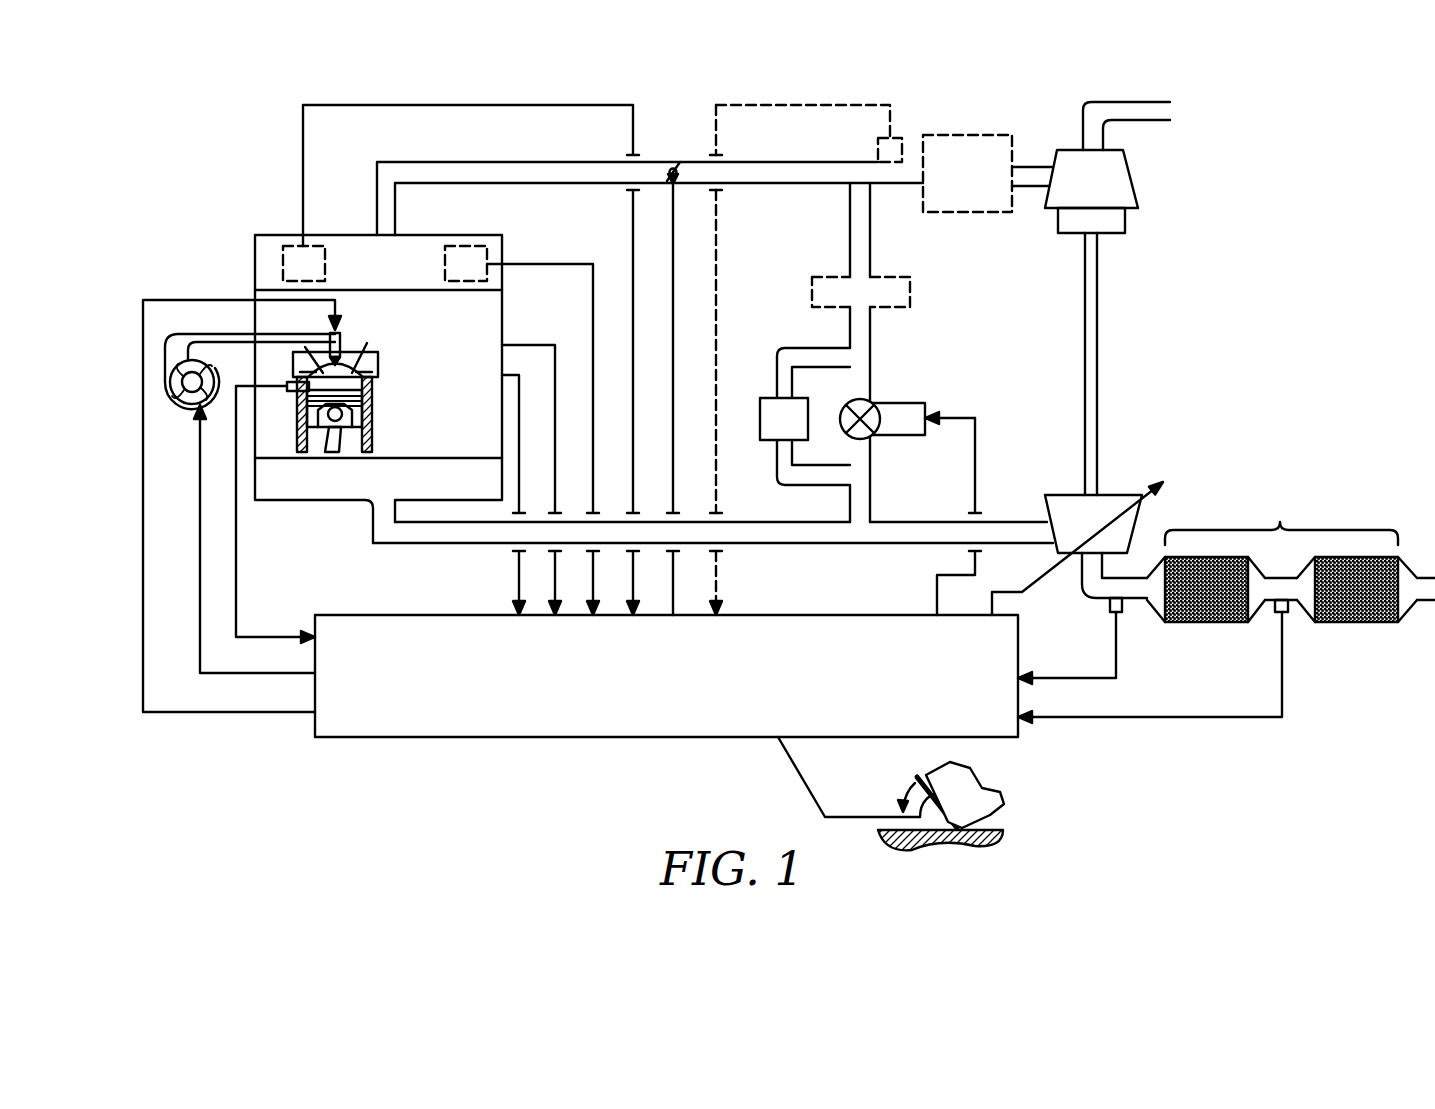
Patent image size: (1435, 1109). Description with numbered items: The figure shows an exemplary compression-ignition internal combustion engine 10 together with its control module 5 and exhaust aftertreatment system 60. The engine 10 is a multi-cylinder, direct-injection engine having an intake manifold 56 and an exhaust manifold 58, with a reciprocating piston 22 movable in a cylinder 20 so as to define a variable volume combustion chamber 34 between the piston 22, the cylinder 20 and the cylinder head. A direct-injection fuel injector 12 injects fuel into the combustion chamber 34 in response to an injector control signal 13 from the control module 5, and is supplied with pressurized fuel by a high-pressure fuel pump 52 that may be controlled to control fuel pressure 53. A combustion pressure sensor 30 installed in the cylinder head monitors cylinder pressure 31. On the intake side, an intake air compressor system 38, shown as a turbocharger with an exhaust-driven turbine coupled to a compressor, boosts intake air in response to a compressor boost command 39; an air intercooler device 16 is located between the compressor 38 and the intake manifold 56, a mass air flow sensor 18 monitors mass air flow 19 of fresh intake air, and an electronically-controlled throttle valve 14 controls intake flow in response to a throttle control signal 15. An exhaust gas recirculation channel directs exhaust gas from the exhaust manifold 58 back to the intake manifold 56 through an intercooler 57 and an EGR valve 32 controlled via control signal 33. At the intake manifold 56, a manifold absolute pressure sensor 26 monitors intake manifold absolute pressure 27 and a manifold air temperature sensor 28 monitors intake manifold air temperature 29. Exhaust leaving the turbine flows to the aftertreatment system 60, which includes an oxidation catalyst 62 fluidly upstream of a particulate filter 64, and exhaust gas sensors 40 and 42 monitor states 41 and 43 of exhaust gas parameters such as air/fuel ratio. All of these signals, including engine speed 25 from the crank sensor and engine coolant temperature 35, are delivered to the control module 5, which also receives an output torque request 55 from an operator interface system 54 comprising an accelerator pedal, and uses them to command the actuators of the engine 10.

The control module 5 is at (668, 737).
The internal combustion engine 10 is at (272, 212).
The direct-injection fuel injector 12 is at (343, 345).
The injector control signal 13 is at (349, 728).
The electronically-controlled throttle valve 14 is at (675, 160).
The throttle control signal 15 is at (687, 647).
The air intercooler device 16 is at (977, 213).
The mass air flow sensor 18 is at (898, 137).
The mass air flow 19 is at (728, 647).
The cylinder 20 is at (372, 428).
The piston 22 is at (359, 418).
The engine speed 25 is at (532, 647).
The manifold absolute pressure sensor 26 is at (466, 264).
The intake manifold absolute pressure 27 is at (607, 647).
The manifold air temperature sensor 28 is at (304, 264).
The intake manifold air temperature 29 is at (647, 647).
The combustion pressure sensor 30 is at (296, 393).
The cylinder pressure 31 is at (349, 653).
The EGR valve 32 is at (873, 400).
The EGR control signal 33 is at (954, 647).
The combustion chamber 34 is at (357, 385).
The engine coolant temperature 35 is at (569, 647).
The intake air compressor system 38 is at (1112, 326).
The compressor boost command 39 is at (1004, 647).
The exhaust gas sensor 40 is at (1110, 608).
The exhaust gas parameter state 41 is at (1014, 698).
The exhaust gas sensor 42 is at (1286, 612).
The exhaust gas parameter state 43 is at (1014, 729).
The high-pressure fuel pump 52 is at (187, 408).
The fuel pressure 53 is at (349, 690).
The operator interface system 54 is at (952, 790).
The output torque request 55 is at (789, 733).
The intake manifold 56 is at (327, 235).
The intercooler 57 is at (812, 293).
The exhaust manifold 58 is at (321, 500).
The exhaust aftertreatment system 60 is at (1280, 520).
The oxidation catalyst 62 is at (1208, 607).
The particulate filter 64 is at (1353, 607).